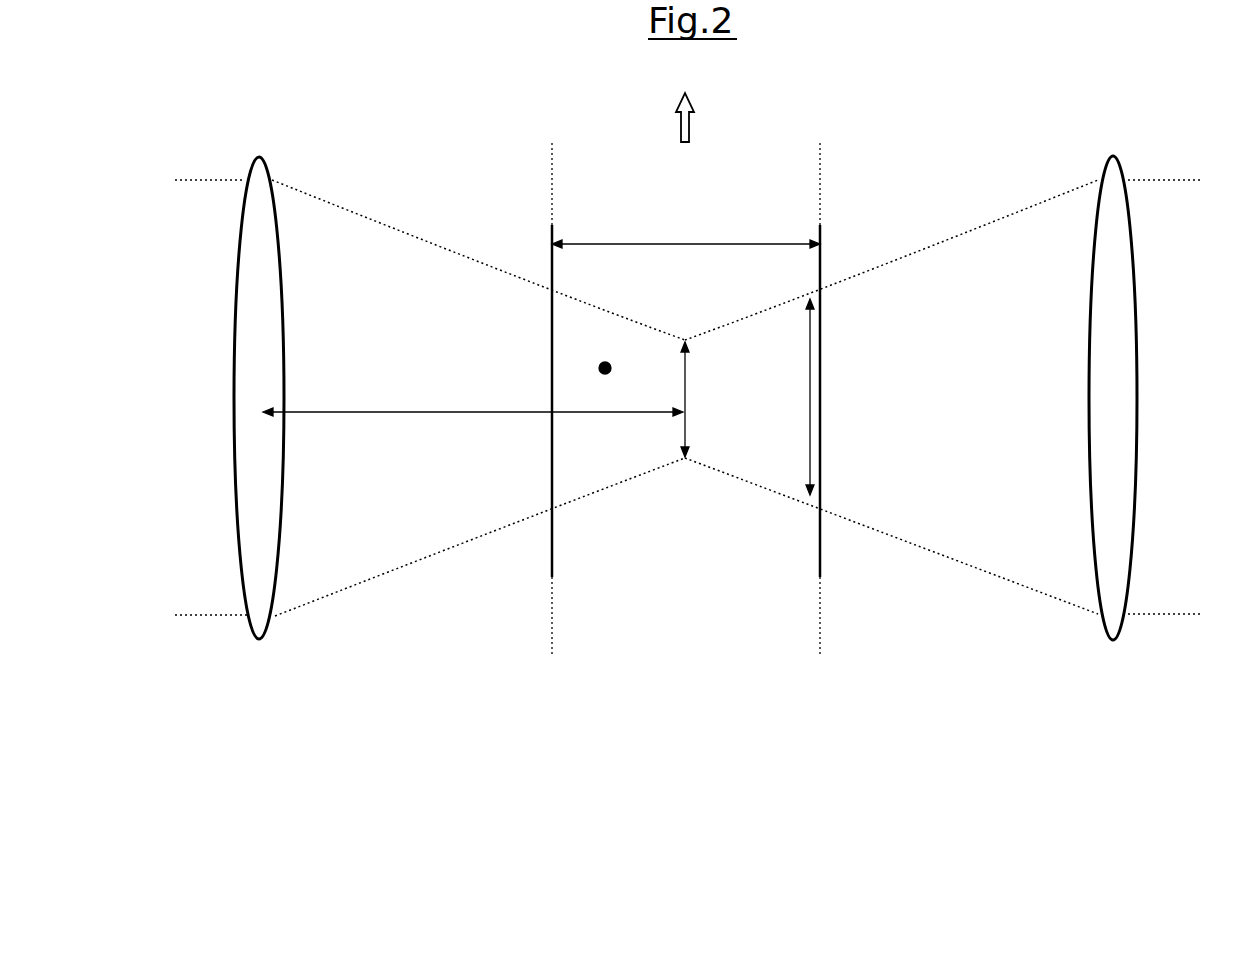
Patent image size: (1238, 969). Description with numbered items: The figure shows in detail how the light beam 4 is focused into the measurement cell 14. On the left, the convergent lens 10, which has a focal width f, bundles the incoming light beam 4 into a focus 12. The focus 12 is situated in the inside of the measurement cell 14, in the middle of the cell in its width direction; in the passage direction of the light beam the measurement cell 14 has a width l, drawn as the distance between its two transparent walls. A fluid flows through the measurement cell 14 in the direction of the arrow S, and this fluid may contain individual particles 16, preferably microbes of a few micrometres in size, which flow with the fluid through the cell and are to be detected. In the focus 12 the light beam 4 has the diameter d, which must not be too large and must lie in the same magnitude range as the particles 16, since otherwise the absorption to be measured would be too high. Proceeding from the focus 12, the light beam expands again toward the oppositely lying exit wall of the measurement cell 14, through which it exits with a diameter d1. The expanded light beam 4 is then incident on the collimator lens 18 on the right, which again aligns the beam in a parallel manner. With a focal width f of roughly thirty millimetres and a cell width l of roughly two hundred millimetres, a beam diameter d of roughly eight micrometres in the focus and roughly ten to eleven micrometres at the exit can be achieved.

The light beam 4 is at (196, 168).
The convergent lens 10 is at (262, 650).
The focus 12 is at (695, 320).
The measurement cell 14 is at (824, 632).
The particles 16 is at (608, 378).
The collimator lens 18 is at (1128, 636).
The width of the measurement cell l is at (598, 237).
The focal width f is at (372, 398).
The beam diameter in the focus d is at (686, 398).
The beam diameter at the exit wall d1 is at (812, 358).
The flow direction arrow S is at (692, 120).